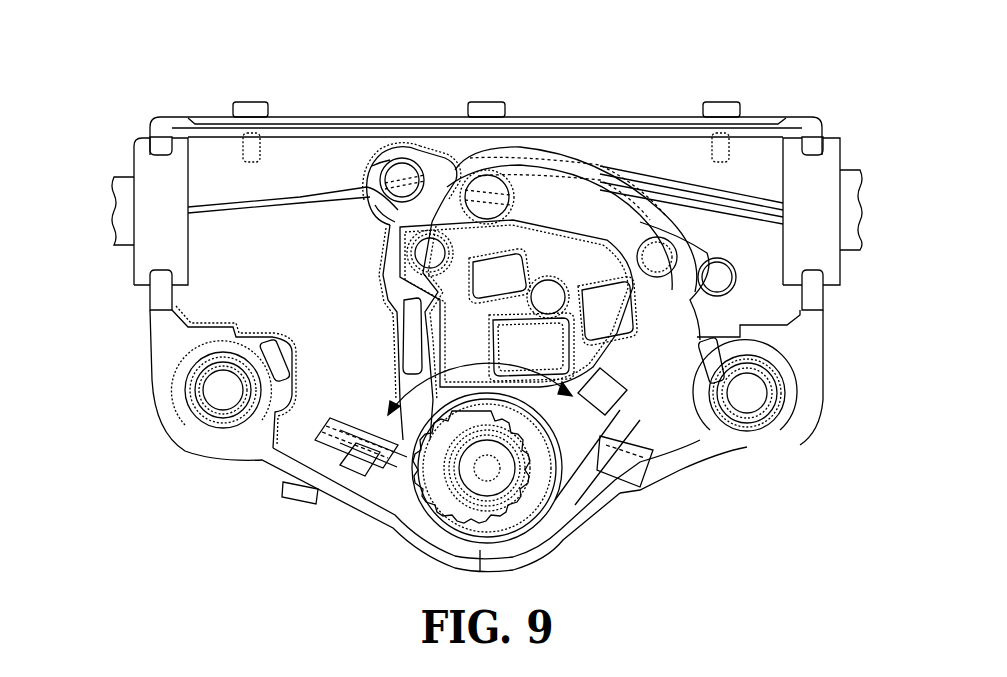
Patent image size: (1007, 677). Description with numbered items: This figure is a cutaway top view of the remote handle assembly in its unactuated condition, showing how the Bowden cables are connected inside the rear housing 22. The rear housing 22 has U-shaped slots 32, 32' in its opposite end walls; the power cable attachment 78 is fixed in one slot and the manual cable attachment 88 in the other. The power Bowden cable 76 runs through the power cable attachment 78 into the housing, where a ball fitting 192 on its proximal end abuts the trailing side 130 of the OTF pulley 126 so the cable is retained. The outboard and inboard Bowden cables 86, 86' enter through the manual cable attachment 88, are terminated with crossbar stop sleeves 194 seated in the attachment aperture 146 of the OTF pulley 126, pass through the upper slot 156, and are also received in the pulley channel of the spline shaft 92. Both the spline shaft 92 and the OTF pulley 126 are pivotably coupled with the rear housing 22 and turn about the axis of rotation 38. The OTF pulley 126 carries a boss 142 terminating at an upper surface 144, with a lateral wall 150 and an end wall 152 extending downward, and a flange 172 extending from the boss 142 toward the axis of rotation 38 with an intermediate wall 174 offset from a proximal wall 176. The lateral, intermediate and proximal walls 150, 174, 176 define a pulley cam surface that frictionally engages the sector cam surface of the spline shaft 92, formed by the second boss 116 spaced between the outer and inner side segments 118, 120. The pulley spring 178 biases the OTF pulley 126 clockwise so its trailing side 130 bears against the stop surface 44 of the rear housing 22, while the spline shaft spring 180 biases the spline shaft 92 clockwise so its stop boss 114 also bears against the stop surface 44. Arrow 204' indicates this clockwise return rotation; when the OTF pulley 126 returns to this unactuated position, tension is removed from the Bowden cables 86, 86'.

The rear housing 22 is at (578, 117).
The U-shaped slot 32 is at (168, 111).
The U-shaped slot 32' is at (826, 105).
The axis of rotation 38 is at (548, 512).
The stop surface 44 is at (760, 340).
The power Bowden cable 76 is at (233, 207).
The power cable attachment 78 is at (148, 170).
The outboard Bowden cable 86 is at (848, 210).
The inboard Bowden cable 86' is at (691, 144).
The manual cable attachment 88 is at (827, 177).
The spline shaft 92 is at (497, 472).
The stop boss 114 is at (650, 397).
The second boss 116 is at (480, 253).
The outer side segment 118 is at (465, 195).
The inner side segment 120 is at (445, 337).
The OTF pulley 126 is at (598, 163).
The trailing side 130 is at (735, 415).
The boss 142 is at (393, 177).
The upper surface 144 is at (383, 207).
The attachment aperture 146 is at (400, 213).
The lateral wall 150 is at (445, 180).
The end wall 152 is at (413, 168).
The upper slot 156 is at (398, 160).
The flange 172 is at (383, 282).
The intermediate wall 174 is at (407, 247).
The proximal wall 176 is at (417, 343).
The pulley spring 178 is at (280, 480).
The spline shaft spring 180 is at (365, 505).
The ball fitting 192 is at (723, 277).
The crossbar stop sleeve 194 is at (375, 160).
The arrow 204' is at (454, 385).